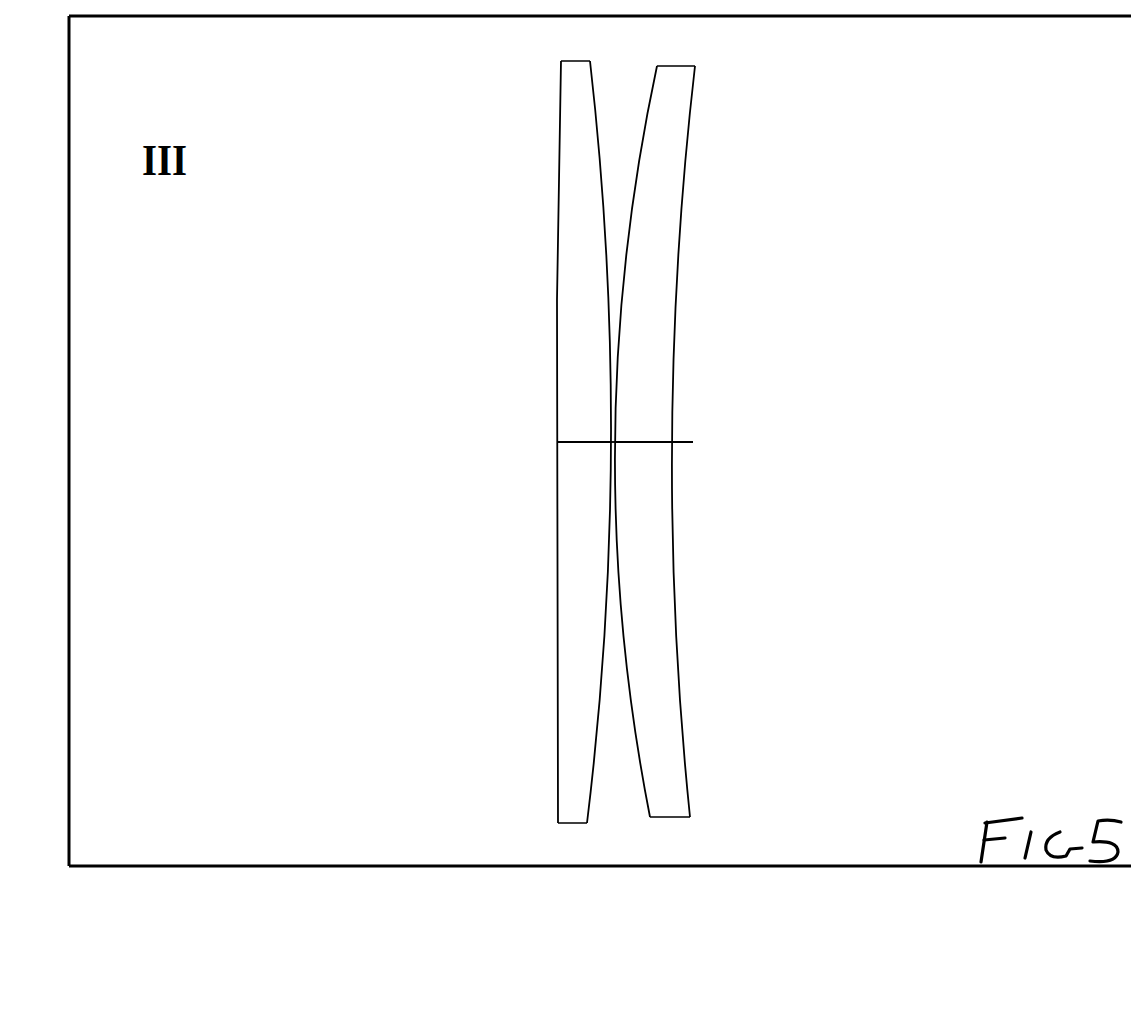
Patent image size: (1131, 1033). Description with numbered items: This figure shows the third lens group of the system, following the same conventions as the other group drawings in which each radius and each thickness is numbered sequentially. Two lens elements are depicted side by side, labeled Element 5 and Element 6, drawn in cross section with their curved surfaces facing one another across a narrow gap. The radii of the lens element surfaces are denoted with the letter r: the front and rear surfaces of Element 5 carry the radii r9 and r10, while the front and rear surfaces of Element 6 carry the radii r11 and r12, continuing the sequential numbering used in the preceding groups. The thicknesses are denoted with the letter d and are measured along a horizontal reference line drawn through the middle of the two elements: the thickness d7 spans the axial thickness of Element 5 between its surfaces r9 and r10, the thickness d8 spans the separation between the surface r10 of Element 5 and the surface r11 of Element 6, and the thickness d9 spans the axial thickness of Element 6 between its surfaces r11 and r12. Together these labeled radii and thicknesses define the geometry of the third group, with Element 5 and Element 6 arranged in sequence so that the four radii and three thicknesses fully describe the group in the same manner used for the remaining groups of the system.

The lens element 5 is at (577, 680).
The lens element 6 is at (660, 703).
The lens element radius r9 is at (567, 197).
The lens element radius r10 is at (603, 263).
The lens element radius r11 is at (638, 193).
The lens element radius r12 is at (673, 253).
The thickness d7 is at (588, 450).
The thickness d8 is at (620, 446).
The thickness d9 is at (642, 445).